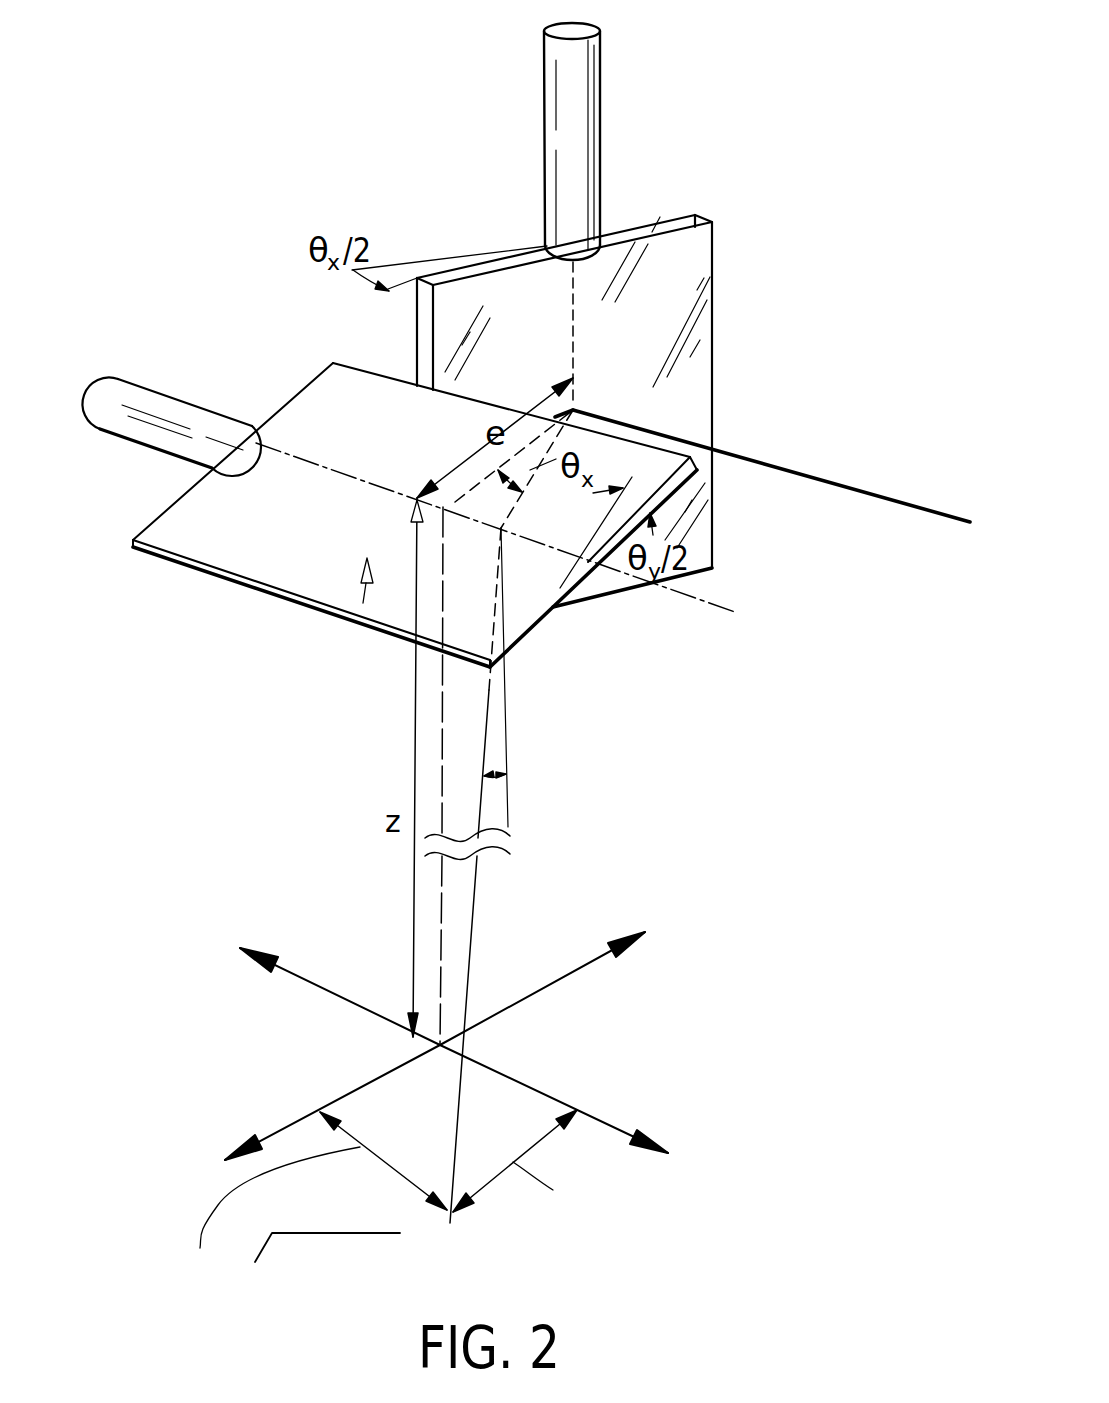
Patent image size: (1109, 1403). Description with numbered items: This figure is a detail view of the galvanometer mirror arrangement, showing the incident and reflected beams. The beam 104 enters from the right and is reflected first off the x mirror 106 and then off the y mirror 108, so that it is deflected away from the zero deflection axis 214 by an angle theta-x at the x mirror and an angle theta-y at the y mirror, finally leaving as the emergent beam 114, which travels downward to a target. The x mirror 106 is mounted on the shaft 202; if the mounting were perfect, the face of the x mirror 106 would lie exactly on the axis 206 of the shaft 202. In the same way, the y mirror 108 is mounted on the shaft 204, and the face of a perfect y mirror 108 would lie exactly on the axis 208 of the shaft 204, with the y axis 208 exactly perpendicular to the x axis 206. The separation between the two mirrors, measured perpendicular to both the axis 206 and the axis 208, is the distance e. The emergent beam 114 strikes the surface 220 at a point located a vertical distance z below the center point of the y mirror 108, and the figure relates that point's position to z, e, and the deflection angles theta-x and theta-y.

The shaft 202 is at (588, 128).
The axis 206 is at (573, 289).
The shaft 204 is at (158, 407).
The x mirror 106 is at (651, 357).
The beam 104 is at (858, 490).
The y mirror 108 is at (363, 603).
The axis 208 is at (533, 545).
The zero deflection axis 214 is at (443, 695).
The emergent beam 114 is at (476, 900).
The surface 220 is at (703, 1069).